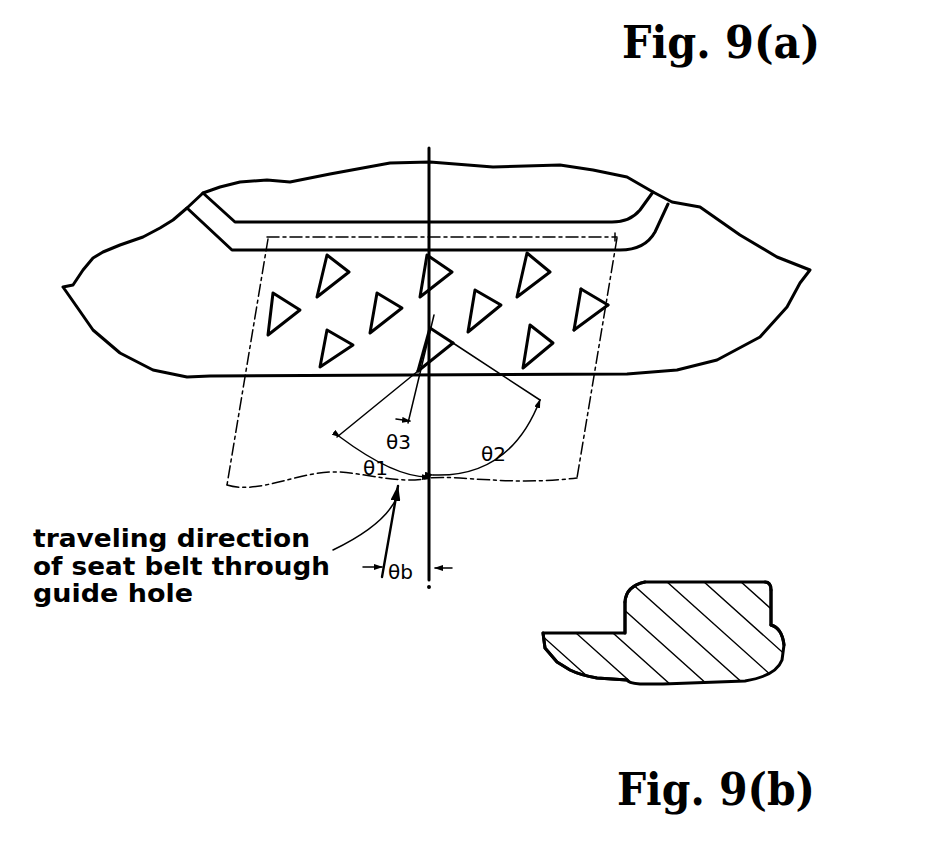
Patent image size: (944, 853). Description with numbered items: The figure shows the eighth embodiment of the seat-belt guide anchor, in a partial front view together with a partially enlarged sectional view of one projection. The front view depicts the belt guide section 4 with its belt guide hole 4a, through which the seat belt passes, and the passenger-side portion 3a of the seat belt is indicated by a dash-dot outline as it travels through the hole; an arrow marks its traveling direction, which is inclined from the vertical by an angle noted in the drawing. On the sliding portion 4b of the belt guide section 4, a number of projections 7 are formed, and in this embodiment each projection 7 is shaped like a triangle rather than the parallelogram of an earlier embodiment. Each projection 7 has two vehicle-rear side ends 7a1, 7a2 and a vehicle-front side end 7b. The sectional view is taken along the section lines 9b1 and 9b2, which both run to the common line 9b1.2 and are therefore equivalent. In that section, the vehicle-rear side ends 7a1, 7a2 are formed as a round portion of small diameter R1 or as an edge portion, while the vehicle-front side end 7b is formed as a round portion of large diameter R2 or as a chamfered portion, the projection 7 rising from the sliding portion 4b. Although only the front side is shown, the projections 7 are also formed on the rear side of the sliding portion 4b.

In FIG. 9A, the belt guide section 4 is at (748, 307).
In FIG. 9A, the belt guide hole 4a is at (455, 227).
In FIG. 9B, the sliding portion 4b is at (628, 657).
In FIG. 9A, the passenger-side portion of the seat belt 3a is at (247, 423).
In FIG. 9A, the projection 7 is at (430, 328).
In FIG. 9B, the projection 7 is at (730, 580).
In FIG. 9A, the vehicle-front side end 7b is at (605, 308).
In FIG. 9B, the vehicle-front side end 7b is at (624, 622).
In FIG. 9A, the vehicle-rear side end 7a1 is at (610, 320).
In FIG. 9B, the vehicle-rear side end 7a1 is at (775, 612).
In FIG. 9A, the vehicle-rear side end 7a2 is at (607, 310).
In FIG. 9B, the vehicle-rear side end 7a2 is at (810, 660).
In FIG. 9A, the section line 9b1 is at (450, 360).
In FIG. 9A, the section line 9b2 is at (448, 321).
In FIG. 9A, the section line 9b1.2 is at (428, 343).
In FIG. 9B, the small diameter R1 is at (772, 582).
In FIG. 9B, the large diameter R2 is at (636, 582).